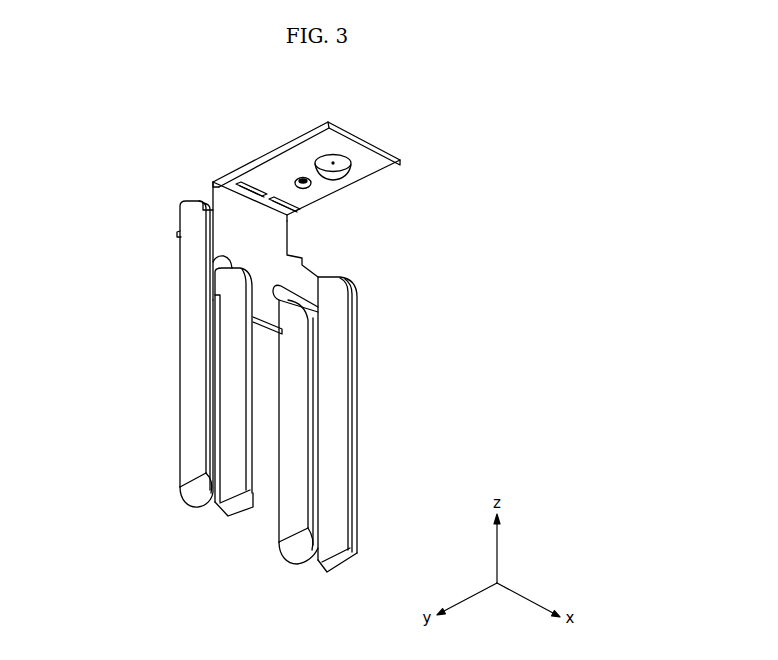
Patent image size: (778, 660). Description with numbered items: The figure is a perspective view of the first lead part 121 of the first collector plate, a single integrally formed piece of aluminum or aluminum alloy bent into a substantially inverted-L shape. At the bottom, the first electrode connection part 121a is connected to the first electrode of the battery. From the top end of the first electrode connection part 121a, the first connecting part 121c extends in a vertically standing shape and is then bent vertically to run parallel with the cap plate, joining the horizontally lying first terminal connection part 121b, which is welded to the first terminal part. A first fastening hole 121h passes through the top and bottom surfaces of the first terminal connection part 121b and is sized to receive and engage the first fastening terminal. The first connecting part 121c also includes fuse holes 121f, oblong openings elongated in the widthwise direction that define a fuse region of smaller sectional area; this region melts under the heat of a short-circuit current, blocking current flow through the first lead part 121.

The first lead part 121 is at (131, 134).
The first electrode connection part 121a is at (230, 450).
The first terminal connection part 121b is at (283, 158).
The first connecting part 121c is at (277, 254).
The fuse hole 121f is at (238, 187).
The first fastening hole 121h is at (334, 162).